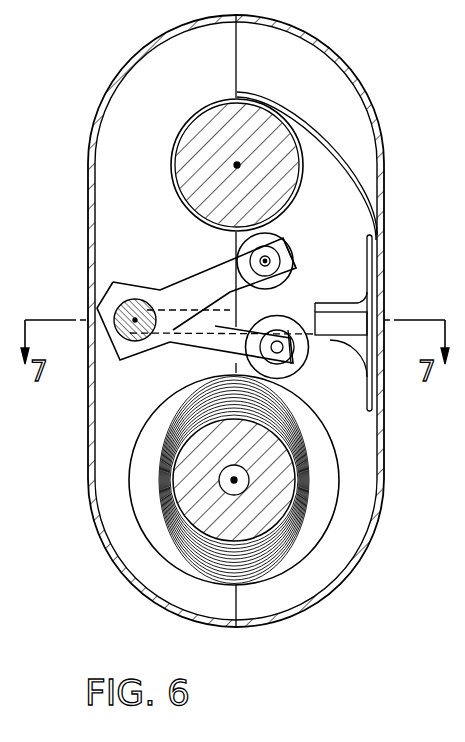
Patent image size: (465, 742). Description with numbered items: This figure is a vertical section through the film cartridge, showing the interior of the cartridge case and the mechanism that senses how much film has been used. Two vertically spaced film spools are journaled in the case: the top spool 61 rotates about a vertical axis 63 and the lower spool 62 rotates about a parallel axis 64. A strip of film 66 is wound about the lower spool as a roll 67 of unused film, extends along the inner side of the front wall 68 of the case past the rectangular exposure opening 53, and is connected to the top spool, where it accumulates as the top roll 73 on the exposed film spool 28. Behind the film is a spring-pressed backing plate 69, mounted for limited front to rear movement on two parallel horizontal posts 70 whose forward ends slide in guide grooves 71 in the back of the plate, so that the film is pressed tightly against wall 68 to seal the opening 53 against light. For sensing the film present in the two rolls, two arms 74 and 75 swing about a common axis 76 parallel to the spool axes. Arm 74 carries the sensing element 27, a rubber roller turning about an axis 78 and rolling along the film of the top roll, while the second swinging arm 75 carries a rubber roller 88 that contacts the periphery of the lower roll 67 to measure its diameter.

The sensing element 27 is at (287, 225).
The exposed film spool 28 is at (205, 127).
The rectangular opening 53 is at (383, 293).
The top film spool 61 is at (183, 177).
The lower film spool 62 is at (247, 528).
The axis 63 is at (239, 163).
The axis 64 is at (232, 480).
The strip of film 66 is at (381, 200).
The roll of unused film 67 is at (169, 562).
The front wall 68 is at (373, 255).
The backing plate 69 is at (360, 294).
The posts 70 is at (288, 307).
The guide grooves 71 is at (342, 323).
The top roll 73 is at (254, 103).
The arm 74 is at (197, 275).
The second swinging arm 75 is at (207, 348).
The common axis 76 is at (120, 360).
The axis 78 is at (288, 246).
The rubber roller 88 is at (298, 377).